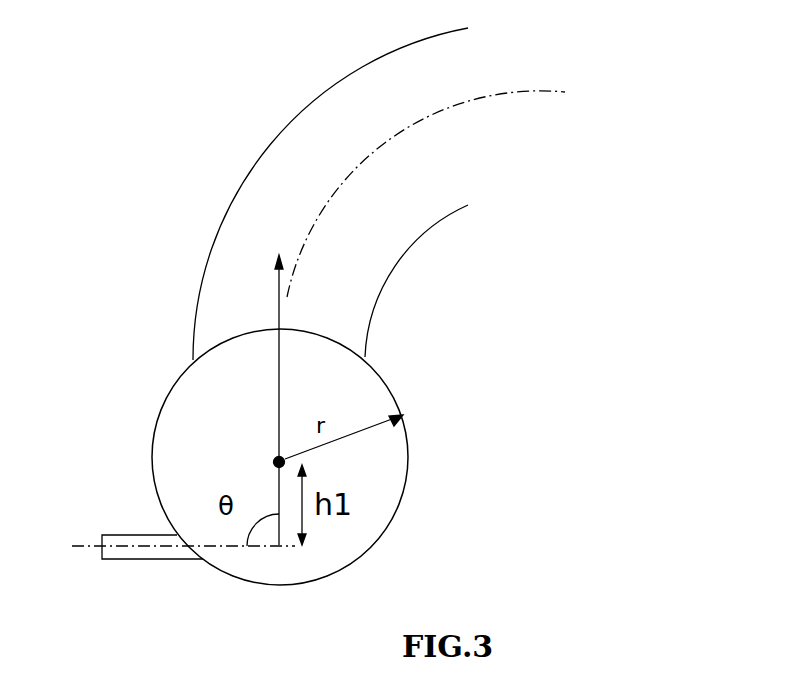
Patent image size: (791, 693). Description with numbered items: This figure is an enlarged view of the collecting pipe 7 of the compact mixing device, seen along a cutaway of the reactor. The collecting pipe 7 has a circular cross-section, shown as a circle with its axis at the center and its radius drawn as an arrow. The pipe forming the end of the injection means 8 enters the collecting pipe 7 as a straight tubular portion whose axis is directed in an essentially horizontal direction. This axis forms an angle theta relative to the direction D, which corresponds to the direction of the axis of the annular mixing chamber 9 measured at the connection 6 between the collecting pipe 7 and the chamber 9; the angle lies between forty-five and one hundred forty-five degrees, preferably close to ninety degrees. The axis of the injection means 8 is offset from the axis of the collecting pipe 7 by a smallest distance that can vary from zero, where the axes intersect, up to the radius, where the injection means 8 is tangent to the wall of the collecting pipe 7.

The connection 6 is at (325, 337).
The collecting pipe 7 is at (160, 412).
The injection means 8 is at (130, 535).
The annular mixing chamber 9 is at (403, 255).
The direction D is at (280, 302).